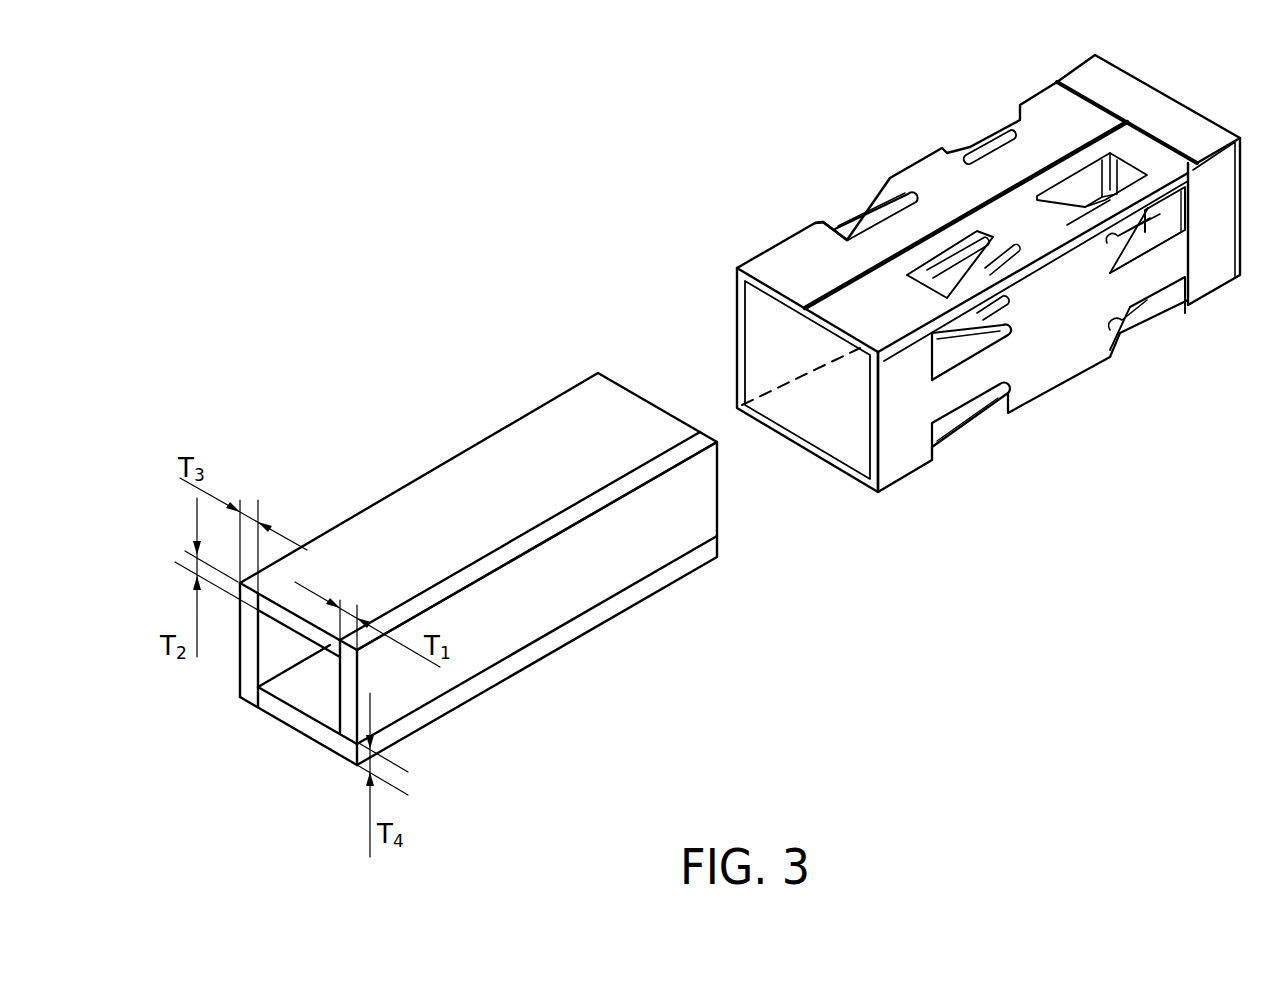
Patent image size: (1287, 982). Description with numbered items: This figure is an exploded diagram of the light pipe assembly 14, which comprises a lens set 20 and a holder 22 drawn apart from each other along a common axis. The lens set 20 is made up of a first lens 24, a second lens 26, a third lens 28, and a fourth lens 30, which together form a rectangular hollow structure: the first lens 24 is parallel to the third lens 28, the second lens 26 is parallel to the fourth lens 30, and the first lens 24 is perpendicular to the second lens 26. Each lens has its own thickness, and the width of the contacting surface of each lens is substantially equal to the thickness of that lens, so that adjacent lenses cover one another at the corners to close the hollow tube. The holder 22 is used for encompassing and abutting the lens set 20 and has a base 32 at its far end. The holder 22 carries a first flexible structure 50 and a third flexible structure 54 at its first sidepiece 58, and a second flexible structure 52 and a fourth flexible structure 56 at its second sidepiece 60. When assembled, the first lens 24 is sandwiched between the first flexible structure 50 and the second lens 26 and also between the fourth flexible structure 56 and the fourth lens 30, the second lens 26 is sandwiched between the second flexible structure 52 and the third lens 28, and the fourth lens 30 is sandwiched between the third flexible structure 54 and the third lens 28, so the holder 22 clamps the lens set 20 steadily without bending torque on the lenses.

The light pipe assembly 14 is at (717, 143).
The lens set 20 is at (607, 335).
The holder 22 is at (739, 206).
The first lens 24 is at (505, 635).
The second lens 26 is at (430, 490).
The third lens 28 is at (272, 650).
The fourth lens 30 is at (315, 700).
The base 32 is at (1182, 120).
The first flexible structure 50 is at (972, 322).
The second flexible structure 52 is at (887, 200).
The third flexible structure 54 is at (983, 413).
The fourth flexible structure 56 is at (987, 263).
The first sidepiece 58 is at (1057, 368).
The second sidepiece 60 is at (812, 238).